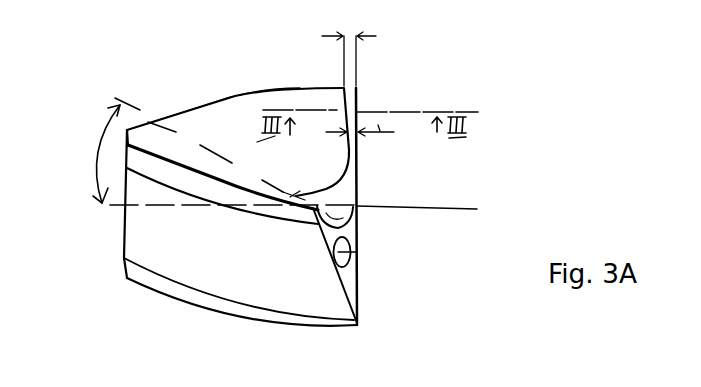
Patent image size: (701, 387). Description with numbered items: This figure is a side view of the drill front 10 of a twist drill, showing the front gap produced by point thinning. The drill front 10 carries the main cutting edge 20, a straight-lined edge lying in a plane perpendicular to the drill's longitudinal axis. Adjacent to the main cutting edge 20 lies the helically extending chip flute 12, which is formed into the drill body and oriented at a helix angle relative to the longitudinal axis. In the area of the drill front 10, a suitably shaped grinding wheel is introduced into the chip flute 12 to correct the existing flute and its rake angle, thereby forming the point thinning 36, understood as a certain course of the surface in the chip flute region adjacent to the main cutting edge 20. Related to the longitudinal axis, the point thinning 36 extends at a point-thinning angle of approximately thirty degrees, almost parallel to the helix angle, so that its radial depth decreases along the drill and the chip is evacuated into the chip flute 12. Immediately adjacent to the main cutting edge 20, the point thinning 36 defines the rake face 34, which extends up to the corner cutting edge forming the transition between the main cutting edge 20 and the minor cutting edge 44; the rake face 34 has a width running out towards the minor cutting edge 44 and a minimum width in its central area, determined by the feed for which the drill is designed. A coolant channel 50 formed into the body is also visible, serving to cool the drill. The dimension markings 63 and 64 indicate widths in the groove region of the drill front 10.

The drill front 10 is at (410, 302).
The chip flute 12 is at (240, 140).
The main cutting edge 20 is at (359, 170).
The rake face 34 is at (356, 89).
The point thinning 36 is at (332, 192).
The minor cutting edge 44 is at (273, 88).
The coolant channel 50 is at (358, 256).
The groove width 63 is at (375, 36).
The clearance width 64 is at (380, 138).